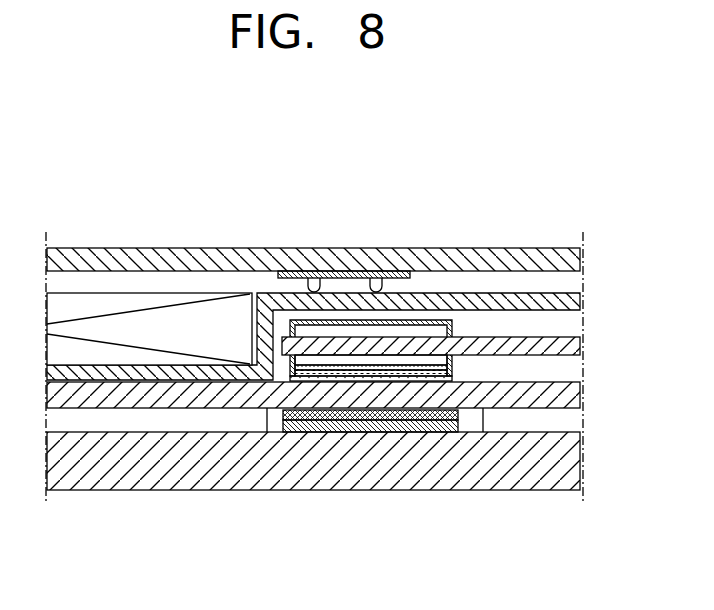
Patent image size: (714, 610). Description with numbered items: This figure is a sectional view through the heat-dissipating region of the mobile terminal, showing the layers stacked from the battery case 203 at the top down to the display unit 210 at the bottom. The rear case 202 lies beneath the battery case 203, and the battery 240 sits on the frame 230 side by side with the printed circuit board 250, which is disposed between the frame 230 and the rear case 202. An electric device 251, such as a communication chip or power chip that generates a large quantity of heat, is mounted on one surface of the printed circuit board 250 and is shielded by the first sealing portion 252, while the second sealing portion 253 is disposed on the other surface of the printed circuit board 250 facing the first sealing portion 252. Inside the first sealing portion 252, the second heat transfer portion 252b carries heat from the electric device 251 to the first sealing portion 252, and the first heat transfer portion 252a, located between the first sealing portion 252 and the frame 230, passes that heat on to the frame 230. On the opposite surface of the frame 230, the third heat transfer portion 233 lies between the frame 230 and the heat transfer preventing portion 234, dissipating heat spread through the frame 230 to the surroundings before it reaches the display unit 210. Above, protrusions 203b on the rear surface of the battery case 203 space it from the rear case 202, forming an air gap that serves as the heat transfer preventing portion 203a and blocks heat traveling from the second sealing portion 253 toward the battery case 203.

The battery case 203 is at (576, 260).
The heat transfer preventing portion 203a is at (290, 270).
The protrusions 203b is at (376, 283).
The rear case 202 is at (576, 302).
The battery 240 is at (153, 302).
The second sealing portion 253 is at (435, 320).
The printed circuit board 250 is at (576, 345).
The electric device 251 is at (447, 358).
The first sealing portion 252 is at (290, 372).
The first heat transfer portion 252a is at (343, 370).
The second heat transfer portion 252b is at (320, 374).
The frame 230 is at (576, 393).
The third heat transfer portion 233 is at (437, 414).
The heat transfer preventing portion 234 is at (393, 426).
The display unit 210 is at (575, 460).